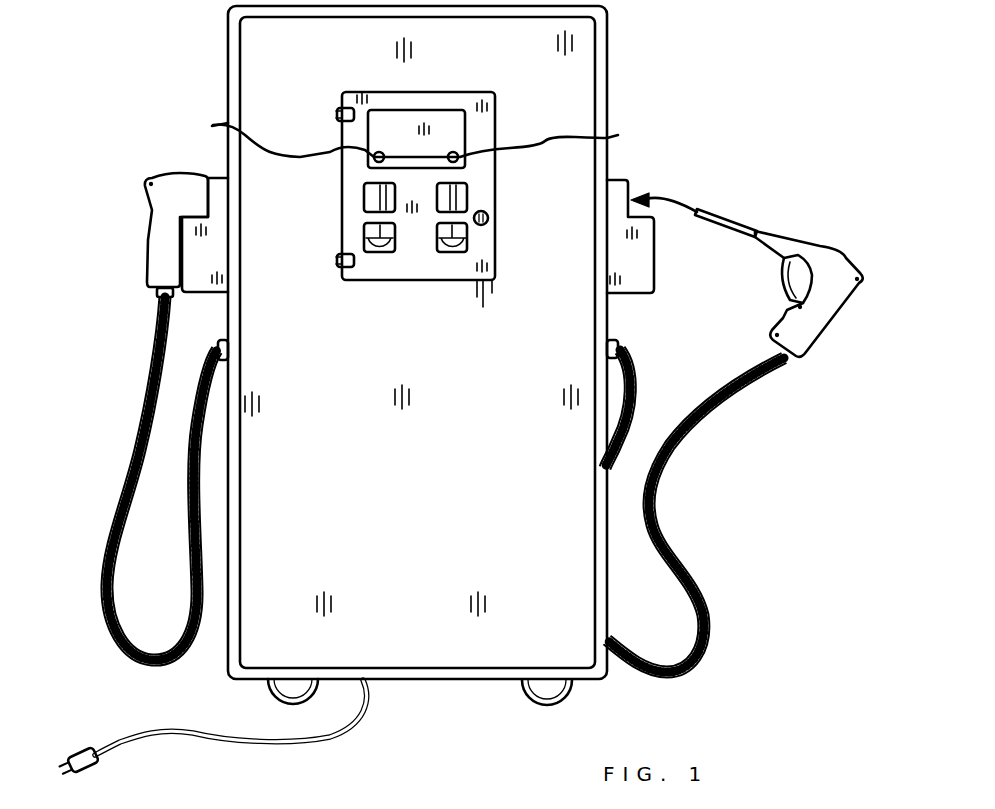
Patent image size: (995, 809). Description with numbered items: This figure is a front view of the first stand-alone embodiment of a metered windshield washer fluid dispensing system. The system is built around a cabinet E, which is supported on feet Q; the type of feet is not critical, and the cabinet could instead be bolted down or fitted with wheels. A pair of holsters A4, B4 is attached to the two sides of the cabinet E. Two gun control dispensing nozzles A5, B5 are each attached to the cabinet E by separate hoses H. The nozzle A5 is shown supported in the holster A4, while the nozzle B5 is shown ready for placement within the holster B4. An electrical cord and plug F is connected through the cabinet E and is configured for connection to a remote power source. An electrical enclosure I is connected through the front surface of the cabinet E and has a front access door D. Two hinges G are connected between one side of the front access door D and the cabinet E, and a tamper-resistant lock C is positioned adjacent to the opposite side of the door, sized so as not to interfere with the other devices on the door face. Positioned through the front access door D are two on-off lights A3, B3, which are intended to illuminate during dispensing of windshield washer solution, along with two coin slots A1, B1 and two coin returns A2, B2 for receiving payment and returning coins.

The cabinet E is at (591, 42).
The electrical enclosure I is at (350, 92).
The front access door D is at (496, 107).
The hinges G is at (337, 114).
The coin slot A1 is at (364, 199).
The coin return A2 is at (364, 240).
The coin slot B1 is at (467, 196).
The coin return B2 is at (467, 238).
The lock C is at (488, 218).
The on-off light A3 is at (203, 125).
The on-off light B3 is at (626, 136).
The holster A4 is at (208, 178).
The gun control dispensing nozzle A5 is at (152, 223).
The holster B4 is at (630, 187).
The gun control dispensing nozzle B5 is at (820, 247).
The hoses H is at (133, 463).
The feet Q is at (273, 692).
The electrical cord and plug F is at (308, 738).